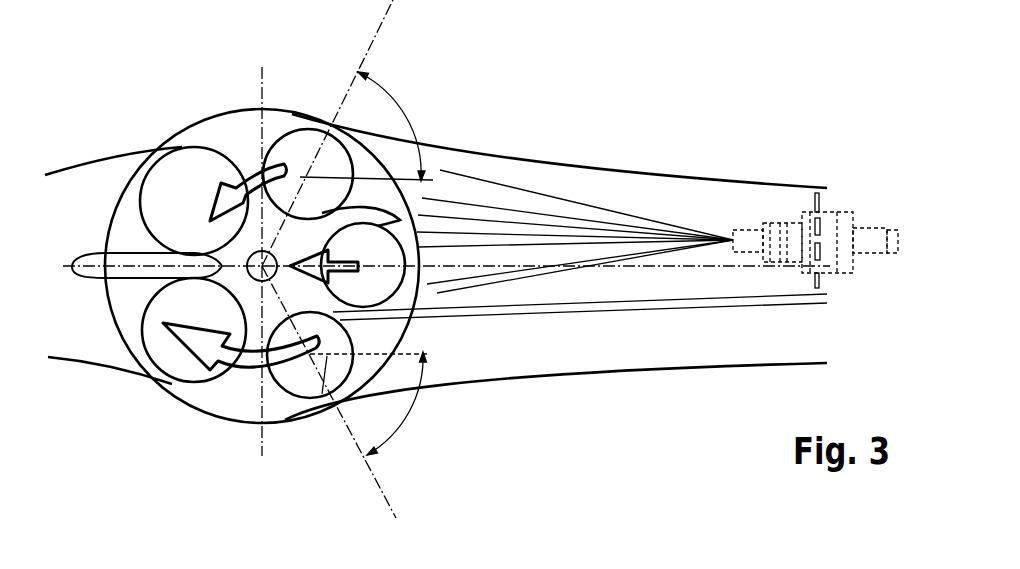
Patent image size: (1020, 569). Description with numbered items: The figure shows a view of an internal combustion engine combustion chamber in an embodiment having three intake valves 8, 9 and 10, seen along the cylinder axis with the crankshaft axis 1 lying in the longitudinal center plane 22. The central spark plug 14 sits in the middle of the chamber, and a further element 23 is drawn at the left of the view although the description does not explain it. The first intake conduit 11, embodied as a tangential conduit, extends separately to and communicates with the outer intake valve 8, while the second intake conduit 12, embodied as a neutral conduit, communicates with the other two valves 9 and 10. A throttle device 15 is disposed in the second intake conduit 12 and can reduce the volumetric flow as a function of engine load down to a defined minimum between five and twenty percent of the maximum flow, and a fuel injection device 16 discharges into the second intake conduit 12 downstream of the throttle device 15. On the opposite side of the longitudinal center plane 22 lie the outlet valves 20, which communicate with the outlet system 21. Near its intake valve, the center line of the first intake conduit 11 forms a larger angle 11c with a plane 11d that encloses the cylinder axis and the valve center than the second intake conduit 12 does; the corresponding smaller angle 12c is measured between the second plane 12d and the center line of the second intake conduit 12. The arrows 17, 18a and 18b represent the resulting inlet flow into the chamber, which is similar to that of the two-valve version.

The crankshaft axis 1 is at (263, 98).
The intake valve 8 is at (326, 397).
The intake valve 9 is at (358, 297).
The intake valve 10 is at (333, 155).
The first intake conduit 11 is at (565, 373).
The angle 11c is at (408, 418).
The plane 11d is at (387, 498).
The second intake conduit 12 is at (612, 177).
The angle 12c is at (410, 127).
The second plane 12d is at (386, 23).
The central spark plug 14 is at (273, 277).
The throttle device 15 is at (818, 194).
The fuel injection device 16 is at (843, 235).
The arrow 17 is at (255, 367).
The arrow 18a is at (313, 256).
The arrow 18b is at (218, 203).
The outlet valves 20 is at (193, 158).
The outlet system 21 is at (63, 172).
The longitudinal center plane 22 is at (262, 435).
The feed tube 23 is at (93, 272).